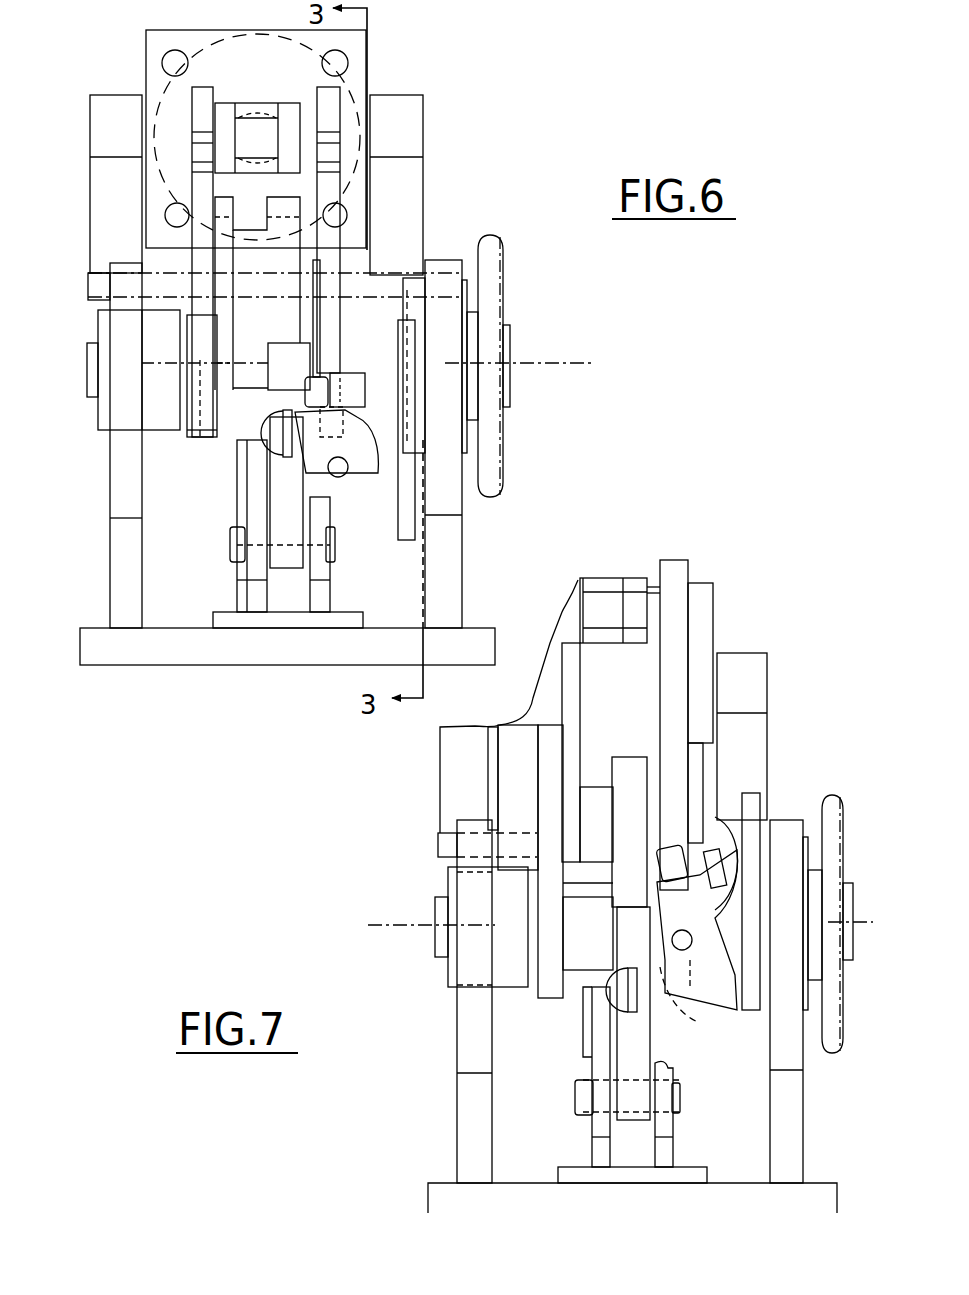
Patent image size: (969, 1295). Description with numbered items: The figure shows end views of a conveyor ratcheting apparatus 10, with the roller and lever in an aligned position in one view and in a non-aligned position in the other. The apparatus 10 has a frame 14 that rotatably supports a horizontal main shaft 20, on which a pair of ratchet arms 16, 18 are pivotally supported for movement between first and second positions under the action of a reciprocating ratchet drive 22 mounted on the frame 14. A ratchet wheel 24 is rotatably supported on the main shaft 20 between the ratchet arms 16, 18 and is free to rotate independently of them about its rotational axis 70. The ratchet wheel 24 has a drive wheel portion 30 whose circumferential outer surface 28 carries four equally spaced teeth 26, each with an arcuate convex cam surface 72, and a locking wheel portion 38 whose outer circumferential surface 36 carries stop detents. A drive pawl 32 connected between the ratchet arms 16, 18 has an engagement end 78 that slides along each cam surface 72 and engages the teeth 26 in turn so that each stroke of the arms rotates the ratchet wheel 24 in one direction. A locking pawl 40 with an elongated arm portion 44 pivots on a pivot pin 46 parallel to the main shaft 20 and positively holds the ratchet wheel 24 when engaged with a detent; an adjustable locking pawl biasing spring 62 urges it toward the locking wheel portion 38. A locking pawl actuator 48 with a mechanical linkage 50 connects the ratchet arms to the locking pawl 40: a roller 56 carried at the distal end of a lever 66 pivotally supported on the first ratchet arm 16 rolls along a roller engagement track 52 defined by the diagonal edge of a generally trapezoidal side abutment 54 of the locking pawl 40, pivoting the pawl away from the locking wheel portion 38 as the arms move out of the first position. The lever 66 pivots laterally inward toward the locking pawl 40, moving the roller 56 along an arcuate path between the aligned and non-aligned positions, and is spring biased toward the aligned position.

In FIG. 6, the conveyor ratcheting apparatus 10 is at (482, 83).
In FIG. 7, the conveyor ratcheting apparatus 10 is at (745, 580).
In FIG. 6, the frame 14 is at (116, 534).
In FIG. 7, the frame 14 is at (800, 1108).
In FIG. 6, the first ratchet arm 16 is at (315, 90).
In FIG. 7, the first ratchet arm 16 is at (680, 563).
In FIG. 6, the second ratchet arm 18 is at (212, 92).
In FIG. 7, the second ratchet arm 18 is at (545, 672).
In FIG. 6, the main shaft 20 is at (88, 355).
In FIG. 7, the main shaft 20 is at (527, 945).
In FIG. 6, the reciprocating ratchet drive 22 is at (355, 45).
In FIG. 6, the ratchet wheel 24 is at (232, 504).
In FIG. 7, the ratchet wheel 24 is at (624, 750).
In FIG. 6, the teeth 26 is at (243, 403).
In FIG. 7, the teeth 26 is at (592, 822).
In FIG. 6, the circumferential outer surface 28 is at (205, 362).
In FIG. 7, the circumferential outer surface 28 is at (497, 845).
In FIG. 6, the drive wheel portion 30 is at (205, 362).
In FIG. 7, the drive wheel portion 30 is at (497, 845).
In FIG. 6, the drive pawl 32 is at (244, 404).
In FIG. 7, the drive pawl 32 is at (575, 862).
In FIG. 6, the outer circumferential surface 36 is at (285, 313).
In FIG. 7, the outer circumferential surface 36 is at (633, 785).
In FIG. 6, the locking wheel portion 38 is at (257, 197).
In FIG. 7, the locking wheel portion 38 is at (700, 663).
In FIG. 6, the locking pawl 40 is at (290, 355).
In FIG. 7, the locking pawl 40 is at (637, 918).
In FIG. 6, the elongated arm portion 44 is at (282, 515).
In FIG. 7, the elongated arm portion 44 is at (637, 1058).
In FIG. 6, the pivot pin 46 is at (232, 542).
In FIG. 7, the pivot pin 46 is at (580, 1098).
In FIG. 6, the locking pawl actuator 48 is at (385, 504).
In FIG. 7, the locking pawl actuator 48 is at (770, 870).
In FIG. 6, the mechanical linkage 50 is at (414, 365).
In FIG. 7, the mechanical linkage 50 is at (751, 901).
In FIG. 7, the roller engagement track 52 is at (712, 985).
In FIG. 6, the side abutment 54 is at (318, 378).
In FIG. 7, the side abutment 54 is at (674, 881).
In FIG. 6, the roller 56 is at (332, 398).
In FIG. 7, the roller 56 is at (665, 850).
In FIG. 6, the locking pawl biasing spring 62 is at (278, 436).
In FIG. 7, the locking pawl biasing spring 62 is at (612, 993).
In FIG. 6, the lever 66 is at (355, 515).
In FIG. 7, the lever 66 is at (735, 995).
In FIG. 6, the rotational axis 70 is at (573, 363).
In FIG. 7, the rotational axis 70 is at (386, 925).
In FIG. 6, the arcuate convex cam surface 72 is at (205, 362).
In FIG. 7, the arcuate convex cam surface 72 is at (497, 845).
In FIG. 6, the engagement end 78 is at (233, 406).
In FIG. 7, the engagement end 78 is at (590, 878).